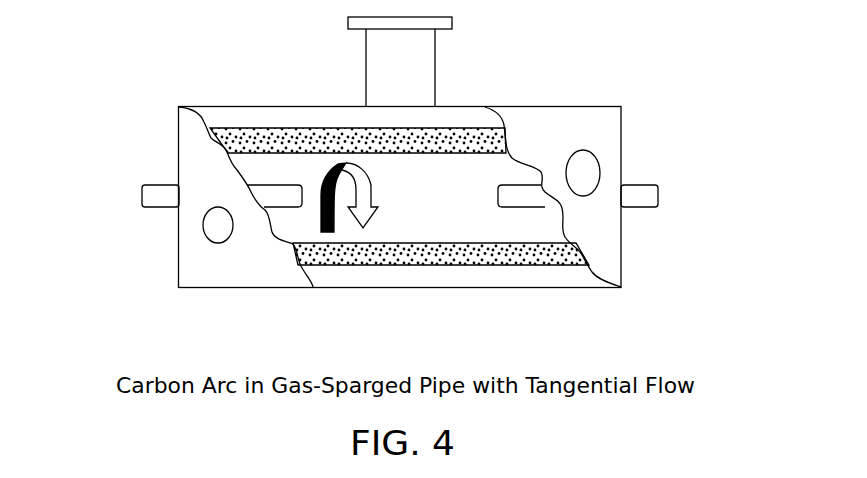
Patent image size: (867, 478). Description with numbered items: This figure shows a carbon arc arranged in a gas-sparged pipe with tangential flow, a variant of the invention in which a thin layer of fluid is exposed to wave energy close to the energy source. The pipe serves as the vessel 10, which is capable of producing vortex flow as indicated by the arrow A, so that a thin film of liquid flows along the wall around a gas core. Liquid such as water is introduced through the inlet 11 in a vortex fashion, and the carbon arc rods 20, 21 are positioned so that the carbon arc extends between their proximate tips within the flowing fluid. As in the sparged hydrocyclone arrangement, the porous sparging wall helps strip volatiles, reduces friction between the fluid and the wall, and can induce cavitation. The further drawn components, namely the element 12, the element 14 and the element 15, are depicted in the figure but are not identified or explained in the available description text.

The vessel 10 is at (222, 270).
The inlet 11 is at (213, 229).
The second carbon electrode 12 is at (588, 169).
The gas sparger (porous material) 14 is at (527, 248).
The gas inlet port with flange 15 is at (407, 67).
The carbon arc rod 20 is at (158, 197).
The carbon arc rod 21 is at (645, 195).
The vortex flow arrow A is at (312, 160).